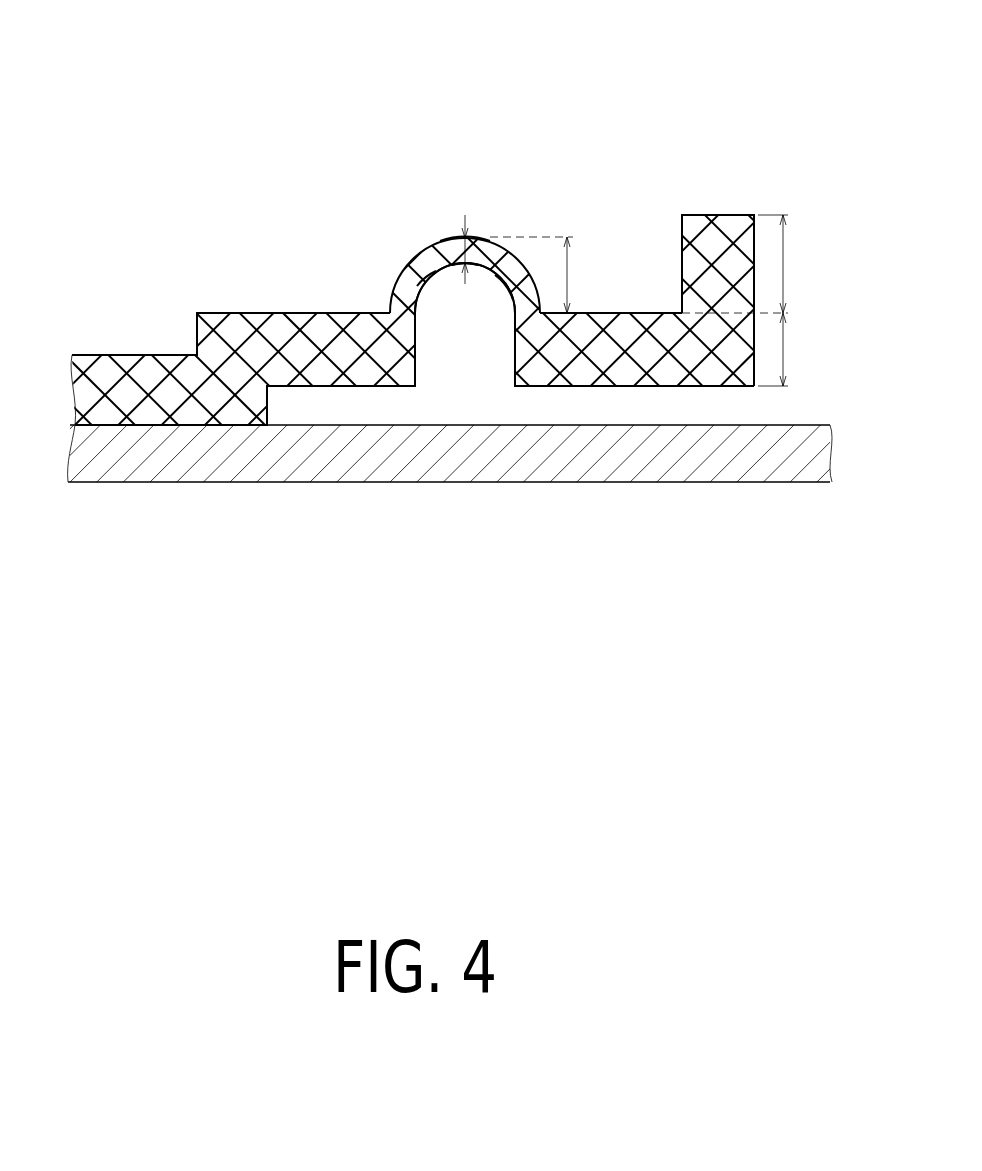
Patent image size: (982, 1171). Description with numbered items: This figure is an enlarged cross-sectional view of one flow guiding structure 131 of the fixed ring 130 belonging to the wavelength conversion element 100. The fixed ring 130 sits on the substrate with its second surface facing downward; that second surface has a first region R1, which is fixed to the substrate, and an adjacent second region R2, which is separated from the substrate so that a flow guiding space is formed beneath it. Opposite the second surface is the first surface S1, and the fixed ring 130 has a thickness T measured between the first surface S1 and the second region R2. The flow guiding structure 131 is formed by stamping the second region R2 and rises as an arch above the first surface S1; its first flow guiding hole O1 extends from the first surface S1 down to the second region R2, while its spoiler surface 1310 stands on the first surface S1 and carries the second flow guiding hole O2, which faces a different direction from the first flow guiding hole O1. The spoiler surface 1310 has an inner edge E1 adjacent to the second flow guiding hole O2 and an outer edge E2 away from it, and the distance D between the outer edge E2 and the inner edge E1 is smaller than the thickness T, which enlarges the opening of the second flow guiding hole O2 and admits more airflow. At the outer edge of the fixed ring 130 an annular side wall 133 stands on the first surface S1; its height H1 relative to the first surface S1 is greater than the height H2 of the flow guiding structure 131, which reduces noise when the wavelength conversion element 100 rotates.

The wavelength conversion element 100 is at (80, 41).
The fixed ring 130 is at (150, 370).
The spoiler surface 1310 is at (405, 286).
The flow guiding structure 131 is at (462, 242).
The annular side wall 133 is at (720, 232).
The second flow guiding hole O2 is at (452, 264).
The outer edge E2 is at (435, 269).
The distance D is at (464, 216).
The first surface S1 is at (625, 311).
The height of flow guiding structure H2 is at (546, 275).
The height of annular side wall H1 is at (748, 300).
The thickness T is at (780, 358).
The first flow guiding hole O1 is at (438, 315).
The inner edge E1 is at (506, 287).
The second region R2 is at (578, 389).
The first region R1 is at (238, 428).